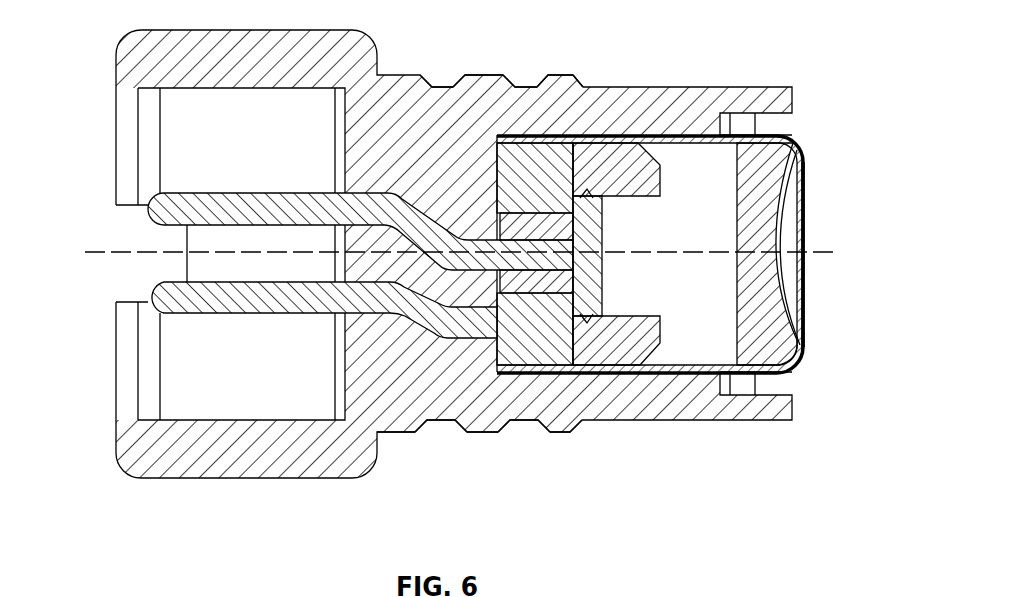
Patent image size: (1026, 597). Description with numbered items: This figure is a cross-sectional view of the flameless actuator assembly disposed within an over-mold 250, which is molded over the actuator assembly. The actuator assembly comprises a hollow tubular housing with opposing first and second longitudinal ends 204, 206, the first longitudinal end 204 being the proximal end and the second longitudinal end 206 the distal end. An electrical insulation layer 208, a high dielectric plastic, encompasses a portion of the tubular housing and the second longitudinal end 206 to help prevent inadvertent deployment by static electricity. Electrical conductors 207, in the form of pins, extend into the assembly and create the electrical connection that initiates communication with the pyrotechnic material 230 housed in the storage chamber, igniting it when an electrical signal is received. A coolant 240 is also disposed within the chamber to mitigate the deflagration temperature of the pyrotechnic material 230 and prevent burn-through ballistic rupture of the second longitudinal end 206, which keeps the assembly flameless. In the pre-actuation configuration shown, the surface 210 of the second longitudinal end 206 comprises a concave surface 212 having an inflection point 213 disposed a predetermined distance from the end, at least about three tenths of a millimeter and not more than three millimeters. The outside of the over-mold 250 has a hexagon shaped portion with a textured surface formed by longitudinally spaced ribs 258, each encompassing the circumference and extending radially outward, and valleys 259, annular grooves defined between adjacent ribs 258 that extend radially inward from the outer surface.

The first longitudinal end 204 is at (497, 126).
The second longitudinal end 206 is at (818, 129).
The electrical conductors 207 is at (245, 194).
The electrical insulation layer 208 is at (672, 376).
The surface 210 is at (824, 261).
The concave surface 212 is at (804, 305).
The inflection point 213 is at (765, 245).
The pyrotechnic material 230 is at (600, 193).
The coolant 240 is at (760, 170).
The over-mold 250 is at (255, 470).
The ribs 258 is at (383, 432).
The valleys 259 is at (440, 423).